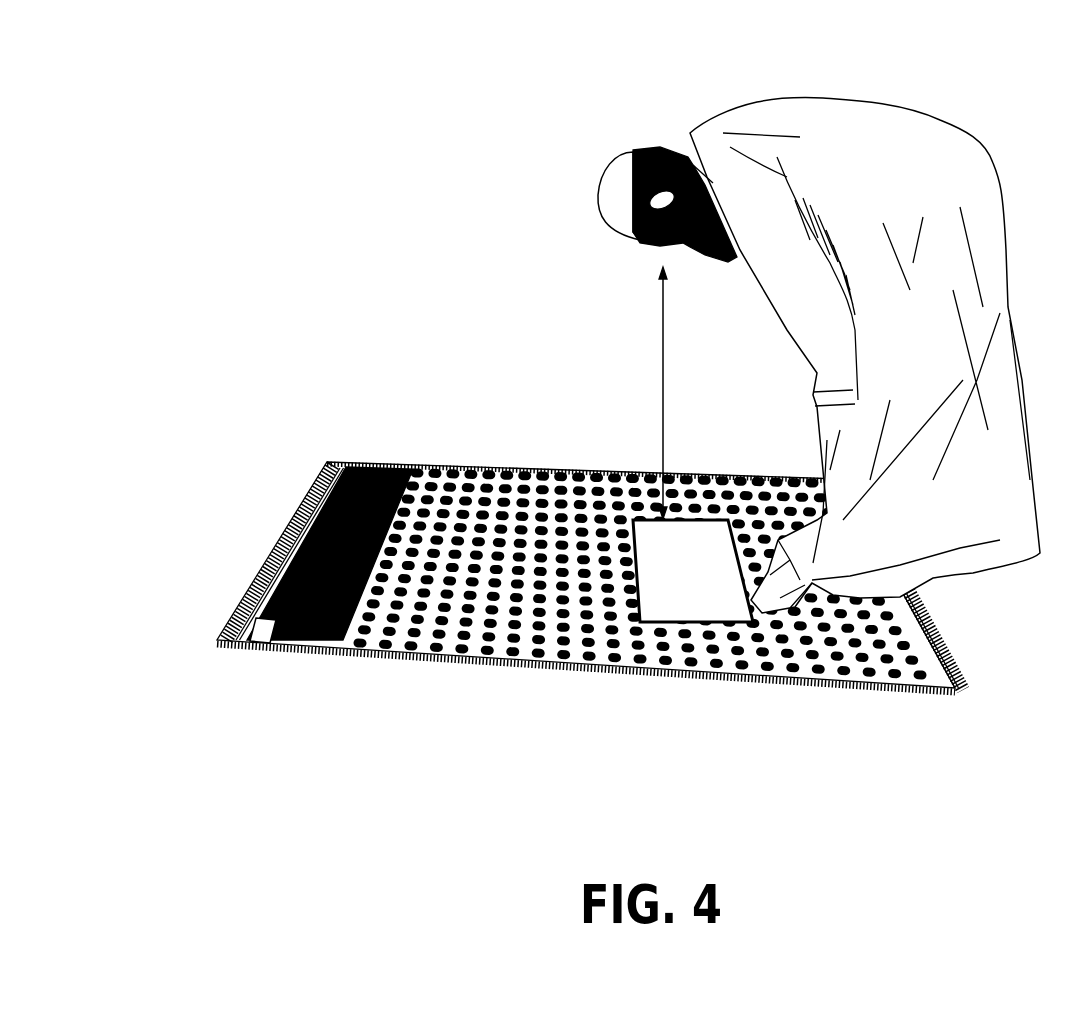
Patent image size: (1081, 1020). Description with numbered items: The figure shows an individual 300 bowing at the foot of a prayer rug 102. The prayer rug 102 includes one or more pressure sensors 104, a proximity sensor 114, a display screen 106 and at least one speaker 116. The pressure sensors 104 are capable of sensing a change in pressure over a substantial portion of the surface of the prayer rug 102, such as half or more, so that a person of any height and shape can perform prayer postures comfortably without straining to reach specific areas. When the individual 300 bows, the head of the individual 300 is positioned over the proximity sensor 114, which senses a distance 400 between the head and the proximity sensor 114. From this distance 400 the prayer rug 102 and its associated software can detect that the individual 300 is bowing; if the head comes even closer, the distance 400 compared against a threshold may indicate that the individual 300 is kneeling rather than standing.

The prayer rug 102 is at (530, 558).
The pressure sensors 104 is at (548, 462).
The display screen 106 is at (385, 462).
The proximity sensor 114 is at (657, 626).
The speaker 116 is at (219, 654).
The individual 300 is at (834, 324).
The distance 400 is at (606, 393).